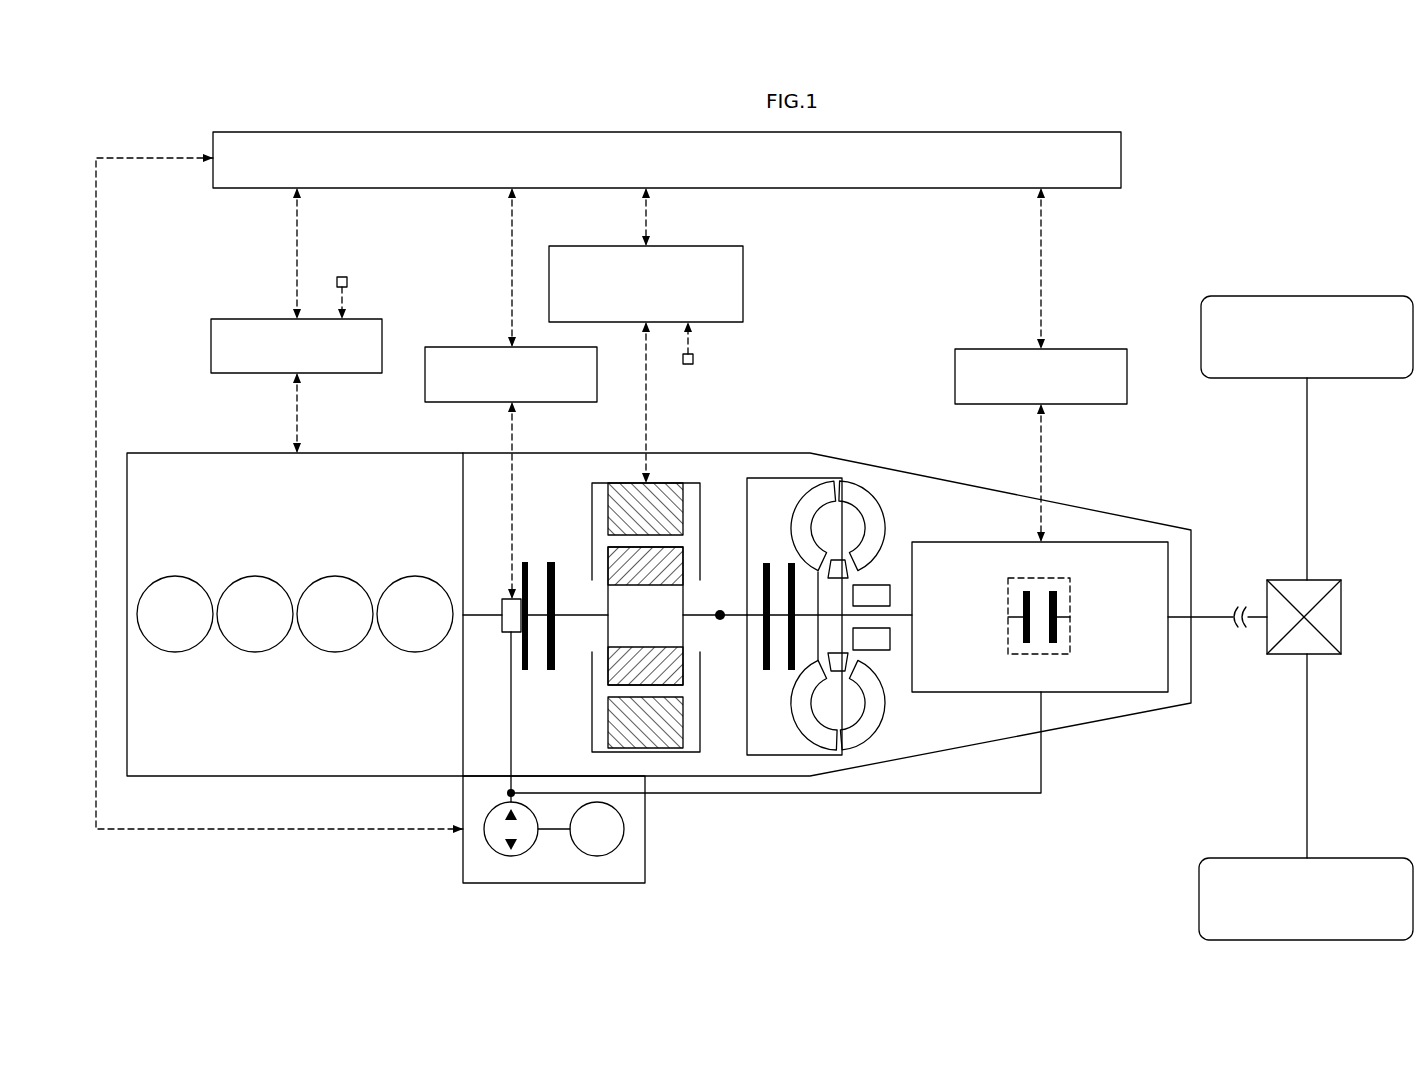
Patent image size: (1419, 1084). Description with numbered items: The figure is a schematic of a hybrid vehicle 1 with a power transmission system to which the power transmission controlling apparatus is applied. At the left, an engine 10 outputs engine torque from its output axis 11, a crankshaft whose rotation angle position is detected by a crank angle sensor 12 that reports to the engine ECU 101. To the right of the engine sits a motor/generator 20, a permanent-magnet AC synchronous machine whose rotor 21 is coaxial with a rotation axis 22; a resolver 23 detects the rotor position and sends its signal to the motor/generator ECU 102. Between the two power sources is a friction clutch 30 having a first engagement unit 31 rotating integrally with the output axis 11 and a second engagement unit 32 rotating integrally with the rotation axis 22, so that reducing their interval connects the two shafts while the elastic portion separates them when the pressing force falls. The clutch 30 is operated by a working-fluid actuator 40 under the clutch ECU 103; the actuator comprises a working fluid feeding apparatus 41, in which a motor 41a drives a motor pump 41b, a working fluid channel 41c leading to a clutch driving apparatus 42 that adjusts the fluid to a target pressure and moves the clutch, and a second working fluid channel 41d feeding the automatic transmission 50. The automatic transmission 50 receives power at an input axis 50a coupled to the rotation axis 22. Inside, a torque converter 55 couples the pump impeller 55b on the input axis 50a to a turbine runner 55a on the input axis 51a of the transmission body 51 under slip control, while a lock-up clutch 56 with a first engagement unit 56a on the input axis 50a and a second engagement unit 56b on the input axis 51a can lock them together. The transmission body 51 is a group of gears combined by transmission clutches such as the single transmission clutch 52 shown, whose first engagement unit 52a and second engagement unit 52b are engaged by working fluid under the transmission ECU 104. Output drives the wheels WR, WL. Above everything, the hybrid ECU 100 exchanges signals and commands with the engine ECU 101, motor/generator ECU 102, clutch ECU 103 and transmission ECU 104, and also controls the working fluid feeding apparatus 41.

The hybrid vehicle 1 is at (1287, 212).
The engine 10 is at (215, 453).
The output axis 11 is at (500, 612).
The crank angle sensor 12 is at (347, 279).
The motor/generator 20 is at (628, 623).
The rotor 21 is at (606, 628).
The rotation axis 22 is at (578, 612).
The resolver 23 is at (693, 364).
The clutch 30 is at (553, 592).
The first engagement unit 31 is at (529, 661).
The second engagement unit 32 is at (556, 563).
The actuator 40 is at (716, 781).
The working fluid feeding apparatus 41 is at (555, 884).
The motor 41a is at (597, 857).
The motor pump 41b is at (511, 857).
The working fluid channel 41c is at (510, 715).
The working fluid channel 41d is at (713, 795).
The clutch driving apparatus 42 is at (504, 633).
The automatic transmission 50 is at (774, 437).
The input axis 50a is at (720, 610).
The transmission body 51 is at (998, 542).
The input axis 51a is at (909, 621).
The transmission clutch 52 is at (1038, 603).
The first engagement unit 52a is at (1022, 628).
The second engagement unit 52b is at (1058, 628).
The torque converter 55 is at (892, 730).
The turbine runner 55a is at (794, 734).
The pump impeller 55b is at (886, 521).
The lock-up clutch 56 is at (806, 616).
The first engagement unit 56a is at (764, 662).
The second engagement unit 56b is at (787, 666).
The hybrid ECU 100 is at (468, 131).
The engine ECU 101 is at (262, 319).
The motor/generator ECU 102 is at (615, 246).
The clutch ECU 103 is at (478, 347).
The transmission ECU 104 is at (1010, 349).
The drive wheel WR is at (1285, 296).
The drive wheel WL is at (1283, 858).